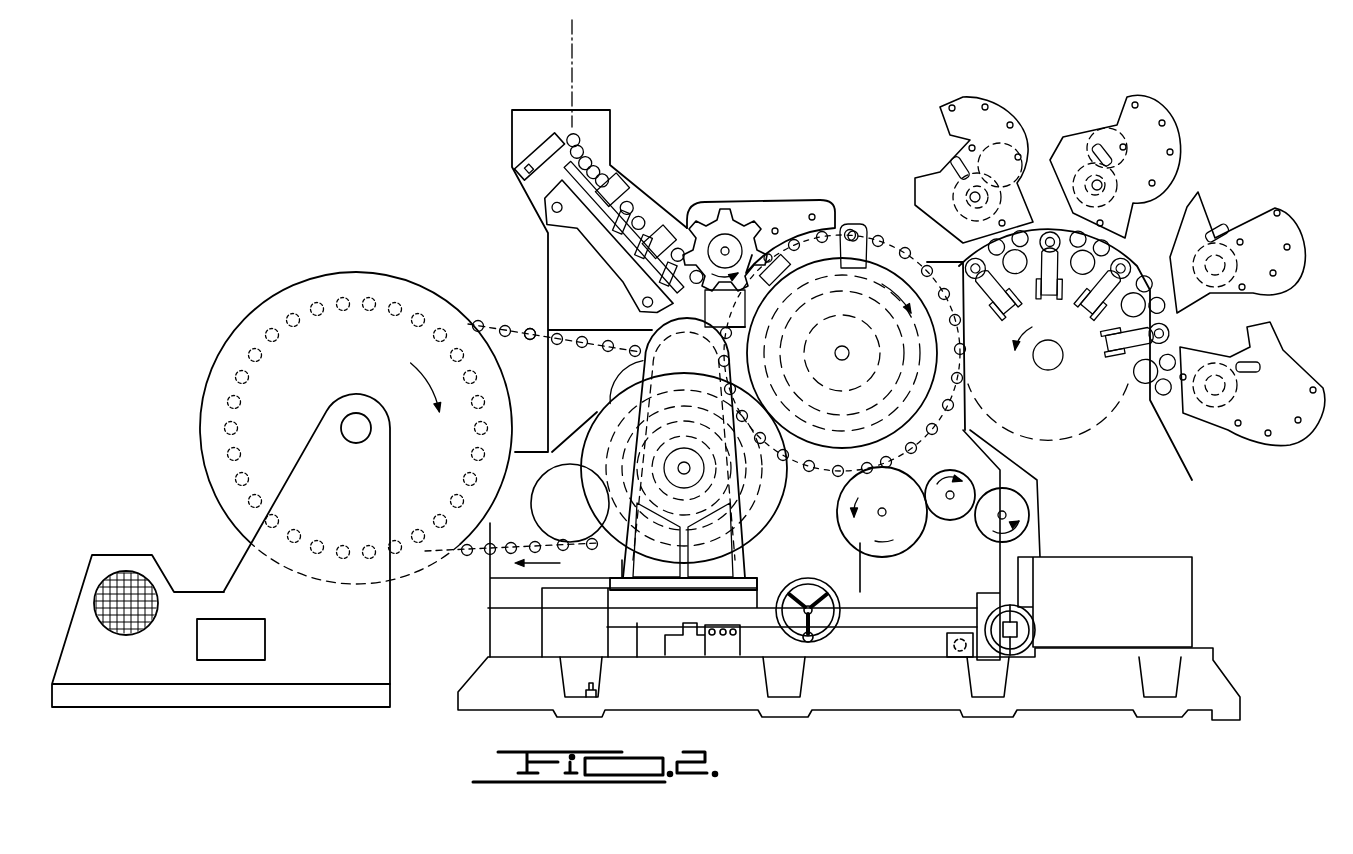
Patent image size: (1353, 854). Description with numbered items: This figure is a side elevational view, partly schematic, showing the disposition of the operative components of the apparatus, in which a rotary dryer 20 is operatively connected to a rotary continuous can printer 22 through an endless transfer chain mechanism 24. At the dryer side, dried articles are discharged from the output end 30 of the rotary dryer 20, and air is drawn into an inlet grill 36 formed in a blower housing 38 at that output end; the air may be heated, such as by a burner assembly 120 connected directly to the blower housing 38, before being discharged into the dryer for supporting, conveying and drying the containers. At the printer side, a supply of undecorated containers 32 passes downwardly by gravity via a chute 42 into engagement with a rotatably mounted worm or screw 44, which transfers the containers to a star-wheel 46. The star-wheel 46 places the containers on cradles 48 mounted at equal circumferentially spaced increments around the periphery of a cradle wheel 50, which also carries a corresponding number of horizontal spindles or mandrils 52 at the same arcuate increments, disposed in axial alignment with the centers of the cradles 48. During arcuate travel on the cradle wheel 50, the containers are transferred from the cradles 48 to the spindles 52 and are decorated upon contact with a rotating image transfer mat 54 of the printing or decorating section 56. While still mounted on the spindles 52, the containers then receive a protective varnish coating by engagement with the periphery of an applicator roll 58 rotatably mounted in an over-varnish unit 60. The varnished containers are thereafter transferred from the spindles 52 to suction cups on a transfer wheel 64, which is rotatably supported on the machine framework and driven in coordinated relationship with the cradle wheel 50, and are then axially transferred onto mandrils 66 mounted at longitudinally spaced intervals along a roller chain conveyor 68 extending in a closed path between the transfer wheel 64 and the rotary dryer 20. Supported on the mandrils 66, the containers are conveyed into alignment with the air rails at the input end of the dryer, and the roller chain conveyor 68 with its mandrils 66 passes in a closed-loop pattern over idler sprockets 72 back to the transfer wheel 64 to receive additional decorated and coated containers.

The rotary dryer 20 is at (322, 489).
The output end 30 is at (360, 368).
The blower housing 38 is at (221, 608).
The inlet grill 36 is at (126, 628).
The burner assembly 120 is at (265, 645).
The endless transfer chain mechanism 24 is at (472, 556).
The mandrils 66 is at (554, 322).
The roller chain conveyor 68 is at (510, 338).
The idler sprockets 72 is at (622, 373).
The chute 42 is at (625, 236).
The worm or screw 44 is at (628, 197).
The containers 32 is at (582, 124).
The star-wheel 46 is at (726, 215).
The rotary continuous can printer 22 is at (795, 190).
The cradles 48 is at (792, 264).
The spindles or mandrils 52 is at (733, 343).
The cradle wheel 50 is at (705, 454).
The transfer wheel 64 is at (735, 531).
The rotating image transfer mat 54 is at (1068, 442).
The printing or decorating section 56 is at (1045, 130).
The applicator roll 58 is at (888, 553).
The over-varnish unit 60 is at (943, 531).